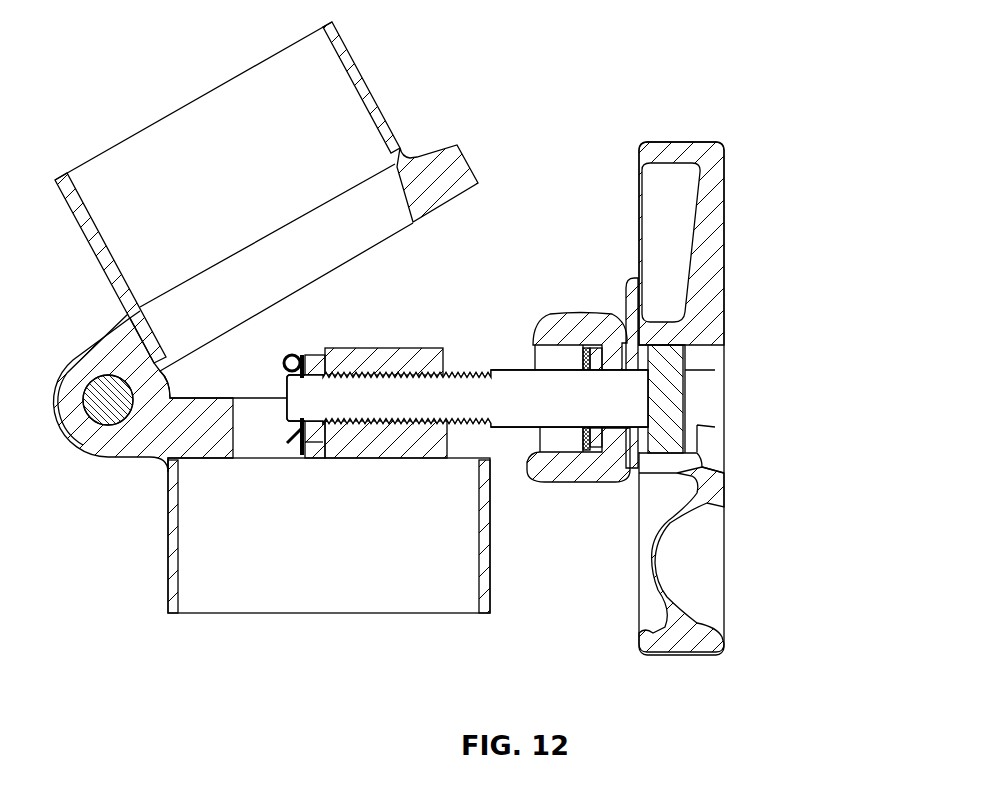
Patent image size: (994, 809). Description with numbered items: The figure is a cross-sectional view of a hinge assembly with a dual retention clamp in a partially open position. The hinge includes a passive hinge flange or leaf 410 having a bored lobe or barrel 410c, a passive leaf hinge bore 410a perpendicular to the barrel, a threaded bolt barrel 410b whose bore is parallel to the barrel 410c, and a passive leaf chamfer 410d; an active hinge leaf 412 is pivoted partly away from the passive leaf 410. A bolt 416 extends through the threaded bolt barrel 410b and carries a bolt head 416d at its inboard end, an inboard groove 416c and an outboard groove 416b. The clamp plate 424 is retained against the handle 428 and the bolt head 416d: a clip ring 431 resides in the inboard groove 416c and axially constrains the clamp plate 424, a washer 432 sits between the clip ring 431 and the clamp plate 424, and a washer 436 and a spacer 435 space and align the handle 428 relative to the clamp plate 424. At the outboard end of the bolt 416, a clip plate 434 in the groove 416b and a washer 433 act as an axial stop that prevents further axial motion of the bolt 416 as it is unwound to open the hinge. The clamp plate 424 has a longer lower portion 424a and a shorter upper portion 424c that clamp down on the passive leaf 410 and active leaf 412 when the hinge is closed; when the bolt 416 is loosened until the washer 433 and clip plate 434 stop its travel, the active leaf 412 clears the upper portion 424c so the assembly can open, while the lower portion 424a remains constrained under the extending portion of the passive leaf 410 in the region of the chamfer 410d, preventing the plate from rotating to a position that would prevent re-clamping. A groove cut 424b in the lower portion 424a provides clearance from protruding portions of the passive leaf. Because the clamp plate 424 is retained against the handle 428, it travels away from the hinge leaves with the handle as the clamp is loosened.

The passive hinge flange 410 is at (423, 614).
The passive leaf hinge bore 410a is at (110, 435).
The threaded bolt barrel 410b is at (400, 350).
The passive hinge flange bored lobe 410c is at (358, 347).
The passive leaf chamfer 410d is at (433, 460).
The active hinge leaf 412 is at (368, 82).
The bolt 416 is at (550, 427).
The outboard groove 416b is at (288, 392).
The inboard groove 416c is at (580, 418).
The bolt head 416d is at (685, 397).
The clamp plate 424 is at (618, 320).
The lower portion of the clamp plate 424a is at (557, 485).
The groove cut 424b is at (533, 457).
The upper portion of the clamp plate 424c is at (555, 317).
The handle 428 is at (727, 148).
The clip ring 431 is at (582, 358).
The washer 432 is at (597, 452).
The washer 433 is at (315, 443).
The clip plate 434 is at (284, 354).
The spacer 435 is at (677, 473).
The washer 436 is at (636, 488).